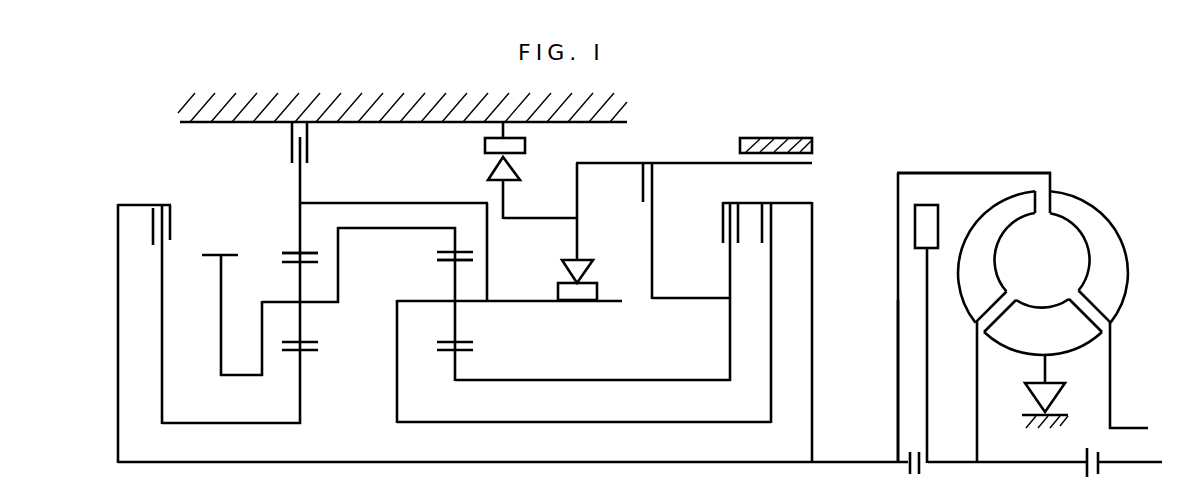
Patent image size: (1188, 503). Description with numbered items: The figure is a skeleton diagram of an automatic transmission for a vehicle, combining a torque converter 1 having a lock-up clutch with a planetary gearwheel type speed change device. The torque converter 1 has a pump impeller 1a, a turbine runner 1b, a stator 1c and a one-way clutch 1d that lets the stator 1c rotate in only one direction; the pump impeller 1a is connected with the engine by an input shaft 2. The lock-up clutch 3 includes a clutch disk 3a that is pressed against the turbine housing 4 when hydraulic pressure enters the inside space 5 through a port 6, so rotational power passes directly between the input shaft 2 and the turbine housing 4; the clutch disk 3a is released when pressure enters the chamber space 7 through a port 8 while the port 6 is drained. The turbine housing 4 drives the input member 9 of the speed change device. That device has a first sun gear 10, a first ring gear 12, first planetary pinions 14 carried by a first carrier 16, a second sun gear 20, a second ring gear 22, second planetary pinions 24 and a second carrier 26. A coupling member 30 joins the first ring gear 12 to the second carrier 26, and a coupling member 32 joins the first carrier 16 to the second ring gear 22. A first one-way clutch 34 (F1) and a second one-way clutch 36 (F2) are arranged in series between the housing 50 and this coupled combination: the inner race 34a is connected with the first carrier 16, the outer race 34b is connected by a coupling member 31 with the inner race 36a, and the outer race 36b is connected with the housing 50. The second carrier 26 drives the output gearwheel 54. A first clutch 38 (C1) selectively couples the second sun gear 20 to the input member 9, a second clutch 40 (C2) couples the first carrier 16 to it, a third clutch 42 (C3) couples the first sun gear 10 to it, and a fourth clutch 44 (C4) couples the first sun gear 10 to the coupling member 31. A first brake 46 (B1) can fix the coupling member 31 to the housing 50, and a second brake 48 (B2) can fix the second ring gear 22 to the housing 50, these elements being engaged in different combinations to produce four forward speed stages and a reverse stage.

The torque converter 1 is at (1044, 283).
The pump impeller 1a is at (974, 302).
The turbine runner 1b is at (1093, 222).
The stator 1c is at (1045, 307).
The one-way clutch 1d is at (1030, 403).
The input shaft 2 is at (1040, 464).
The lock-up clutch 3 is at (941, 321).
The clutch disk 3a is at (939, 228).
The turbine housing 4 is at (898, 232).
The inside space 5 is at (955, 413).
The port 6 is at (1094, 466).
The chamber space 7 is at (908, 368).
The port 8 is at (914, 476).
The input member 9 is at (861, 460).
The first sun gear 10 is at (443, 352).
The first ring gear 12 is at (466, 250).
The first planetary pinion 14 is at (440, 262).
The first carrier 16 is at (467, 303).
The second sun gear 20 is at (318, 352).
The second ring gear 22 is at (324, 239).
The second planetary pinion 24 is at (284, 264).
The second carrier 26 is at (318, 304).
The coupling member 30 is at (348, 229).
The coupling member 31 is at (576, 241).
The coupling member 32 is at (372, 203).
The first one-way clutch 34 is at (584, 292).
The inner race 34a is at (594, 270).
The outer race 34b is at (563, 272).
The second one-way clutch 36 is at (506, 170).
The inner race 36a is at (490, 172).
The outer race 36b is at (485, 146).
The first clutch 38 is at (171, 233).
The second clutch 40 is at (773, 228).
The third clutch 42 is at (722, 240).
The fourth clutch 44 is at (643, 172).
The first brake 46 is at (774, 127).
The second brake 48 is at (309, 149).
The housing 50 is at (627, 105).
The output gearwheel 54 is at (242, 245).
The first brake B1 is at (832, 145).
The second brake B2 is at (276, 142).
The first clutch C1 is at (162, 189).
The second clutch C2 is at (776, 192).
The third clutch C3 is at (737, 192).
The fourth clutch C4 is at (681, 184).
The first one-way clutch F1 is at (576, 322).
The second one-way clutch F2 is at (545, 139).